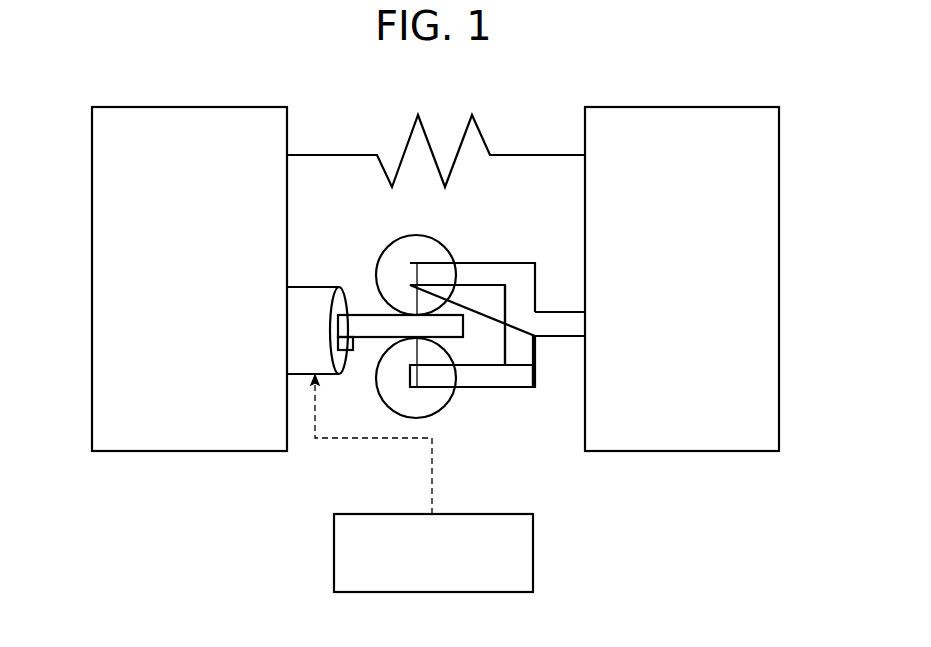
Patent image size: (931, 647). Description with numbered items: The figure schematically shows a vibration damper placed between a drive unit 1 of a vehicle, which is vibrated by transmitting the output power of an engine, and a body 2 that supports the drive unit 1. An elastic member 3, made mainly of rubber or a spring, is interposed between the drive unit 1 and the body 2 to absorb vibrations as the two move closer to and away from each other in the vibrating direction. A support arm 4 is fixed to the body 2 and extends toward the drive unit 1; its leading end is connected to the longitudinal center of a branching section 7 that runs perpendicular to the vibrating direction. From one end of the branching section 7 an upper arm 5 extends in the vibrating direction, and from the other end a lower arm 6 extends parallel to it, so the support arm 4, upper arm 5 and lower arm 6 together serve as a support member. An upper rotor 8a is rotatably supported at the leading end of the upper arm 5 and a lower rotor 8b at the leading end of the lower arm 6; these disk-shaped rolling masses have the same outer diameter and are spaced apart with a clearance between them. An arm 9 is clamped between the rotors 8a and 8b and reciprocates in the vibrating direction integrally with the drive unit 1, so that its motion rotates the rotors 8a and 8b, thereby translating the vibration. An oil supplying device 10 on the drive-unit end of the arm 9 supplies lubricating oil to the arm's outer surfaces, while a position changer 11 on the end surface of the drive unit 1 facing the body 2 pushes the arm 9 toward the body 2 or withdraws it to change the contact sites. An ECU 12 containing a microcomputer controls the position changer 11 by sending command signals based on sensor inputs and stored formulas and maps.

The drive unit 1 is at (191, 106).
The body 2 is at (691, 106).
The elastic member 3 is at (419, 115).
The support arm 4 is at (561, 320).
The upper arm 5 is at (493, 270).
The lower arm 6 is at (508, 380).
The branching section 7 is at (523, 365).
The upper rotor 8a is at (428, 252).
The lower rotor 8b is at (427, 403).
The arm 9 is at (373, 322).
The oil supplying device 10 is at (352, 346).
The position changer 11 is at (308, 294).
The ECU 12 is at (533, 553).